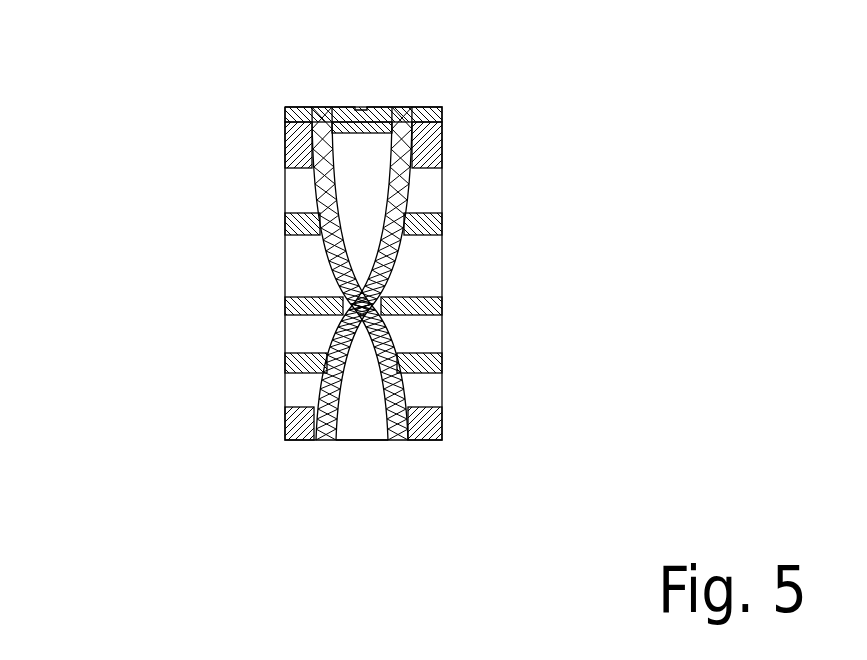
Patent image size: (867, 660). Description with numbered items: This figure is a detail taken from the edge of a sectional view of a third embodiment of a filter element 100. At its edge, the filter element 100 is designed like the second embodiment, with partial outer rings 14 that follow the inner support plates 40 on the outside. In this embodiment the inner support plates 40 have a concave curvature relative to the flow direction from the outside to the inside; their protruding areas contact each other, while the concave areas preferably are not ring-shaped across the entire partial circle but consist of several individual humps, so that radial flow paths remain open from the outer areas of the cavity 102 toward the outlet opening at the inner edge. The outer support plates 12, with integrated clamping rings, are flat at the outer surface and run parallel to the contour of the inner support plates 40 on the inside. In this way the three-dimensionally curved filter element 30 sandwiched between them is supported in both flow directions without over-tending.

The filter element 100 is at (150, 85).
The outer support plates 12 is at (295, 148).
The partial outer rings 14 is at (394, 107).
The three-dimensionally curved filter element 30 is at (333, 265).
The inner support plates 40 is at (345, 327).
The cavity 102 is at (370, 415).